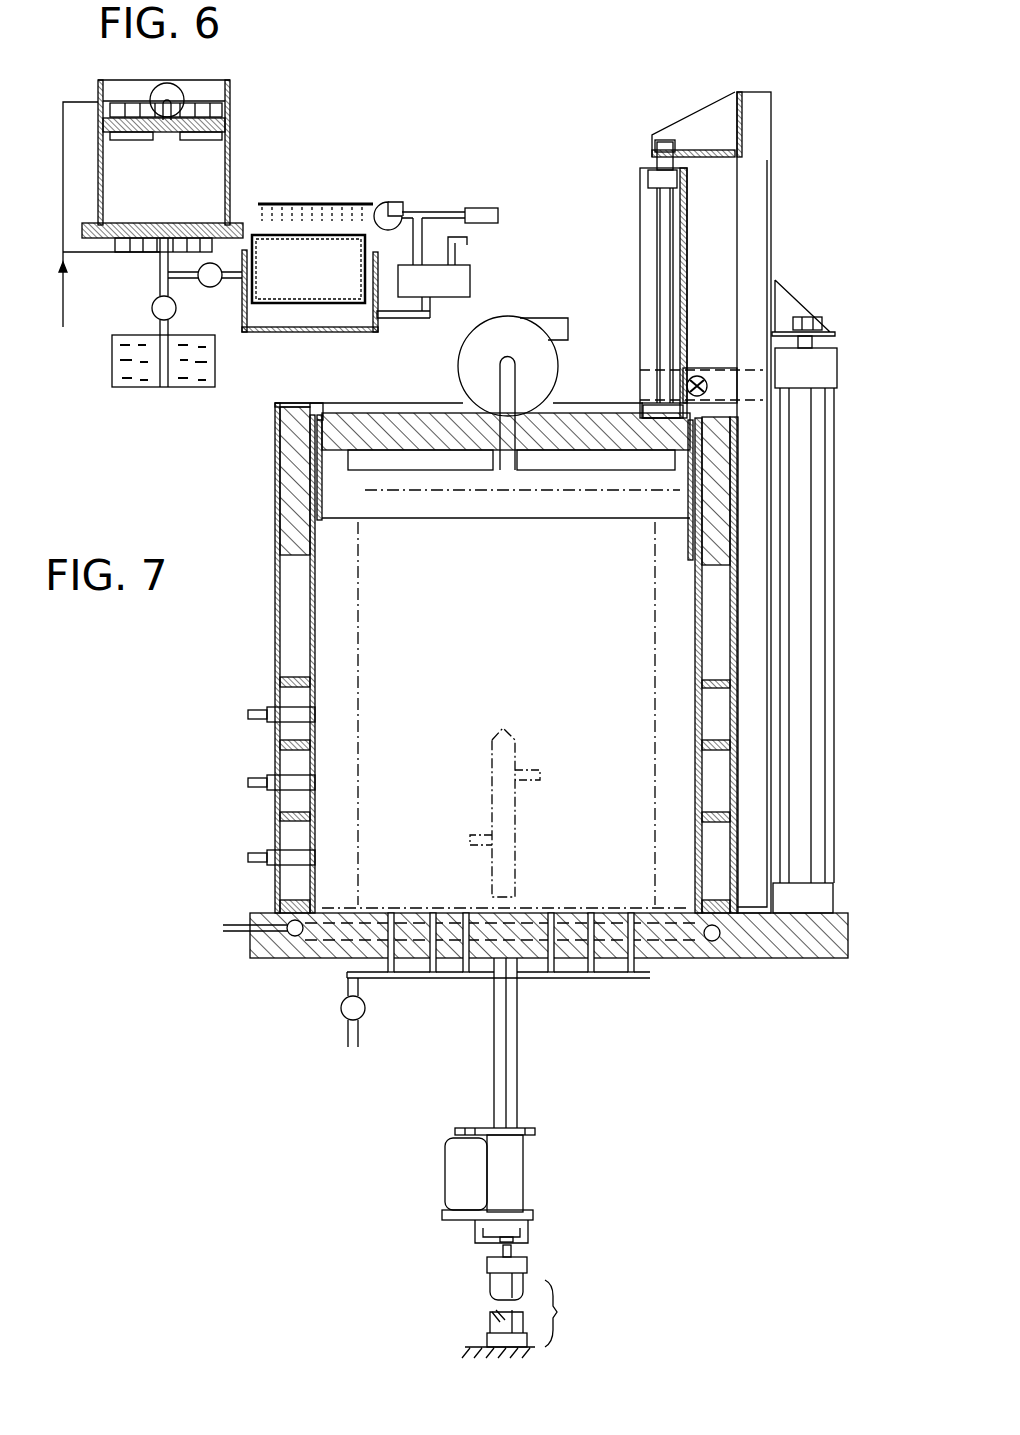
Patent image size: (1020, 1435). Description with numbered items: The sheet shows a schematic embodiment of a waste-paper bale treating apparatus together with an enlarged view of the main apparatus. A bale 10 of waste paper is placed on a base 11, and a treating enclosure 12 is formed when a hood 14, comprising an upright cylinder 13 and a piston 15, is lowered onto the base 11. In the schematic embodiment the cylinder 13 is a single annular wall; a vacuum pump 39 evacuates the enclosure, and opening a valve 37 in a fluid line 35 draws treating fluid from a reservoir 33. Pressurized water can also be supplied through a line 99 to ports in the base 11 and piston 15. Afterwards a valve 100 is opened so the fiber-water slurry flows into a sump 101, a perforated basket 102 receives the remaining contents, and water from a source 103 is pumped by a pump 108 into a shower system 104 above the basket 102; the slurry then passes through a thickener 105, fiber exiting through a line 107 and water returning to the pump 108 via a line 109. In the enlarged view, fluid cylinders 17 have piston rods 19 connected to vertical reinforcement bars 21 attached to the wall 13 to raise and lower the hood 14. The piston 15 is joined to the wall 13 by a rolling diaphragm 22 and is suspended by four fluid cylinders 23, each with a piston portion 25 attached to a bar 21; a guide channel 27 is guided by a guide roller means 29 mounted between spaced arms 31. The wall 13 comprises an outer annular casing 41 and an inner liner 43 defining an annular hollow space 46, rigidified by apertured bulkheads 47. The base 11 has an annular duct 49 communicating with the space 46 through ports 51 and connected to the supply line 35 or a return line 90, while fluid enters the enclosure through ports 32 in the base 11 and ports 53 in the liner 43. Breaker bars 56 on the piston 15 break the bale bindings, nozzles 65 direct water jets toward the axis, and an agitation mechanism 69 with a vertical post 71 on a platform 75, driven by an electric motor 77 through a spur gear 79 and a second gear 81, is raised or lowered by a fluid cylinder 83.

In FIG. 7, the bale 10 is at (358, 600).
In FIG. 7, the base 11 is at (800, 958).
In FIG. 7, the treating enclosure 12 is at (330, 695).
In FIG. 6, the cylinder 13 is at (232, 95).
In FIG. 7, the cylinder 13 is at (738, 462).
In FIG. 6, the hood 14 is at (98, 90).
In FIG. 7, the hood 14 is at (725, 652).
In FIG. 6, the piston 15 is at (232, 125).
In FIG. 7, the piston 15 is at (568, 455).
In FIG. 7, the fluid cylinders 17 is at (818, 712).
In FIG. 7, the piston rods 19 is at (812, 340).
In FIG. 7, the vertical reinforcement bars 21 is at (768, 203).
In FIG. 7, the rolling diaphragm 22 is at (323, 520).
In FIG. 7, the fluid cylinders 23 is at (648, 250).
In FIG. 7, the piston portion 25 is at (655, 162).
In FIG. 7, the guide channel 27 is at (640, 220).
In FIG. 7, the guide roller means 29 is at (697, 375).
In FIG. 7, the spaced arms 31 is at (730, 368).
In FIG. 7, the ports 32 is at (394, 960).
In FIG. 6, the treating fluid reservoir 33 is at (112, 362).
In FIG. 6, the fluid line 35 is at (160, 285).
In FIG. 7, the fluid line 35 is at (348, 1035).
In FIG. 6, the valve 37 is at (152, 310).
In FIG. 7, the valve 37 is at (341, 1008).
In FIG. 6, the vacuum pump 39 is at (185, 95).
In FIG. 7, the vacuum pump 39 is at (555, 368).
In FIG. 7, the outer annular casing 41 is at (275, 618).
In FIG. 7, the inner rigid liner 43 is at (315, 615).
In FIG. 7, the annular hollow space 46 is at (290, 677).
In FIG. 7, the apertured bulkheads 47 is at (695, 735).
In FIG. 7, the annular internal flow duct 49 is at (712, 942).
In FIG. 7, the ports 51 is at (702, 905).
In FIG. 7, the ports 53 is at (315, 760).
In FIG. 7, the breaker bars 56 is at (455, 455).
In FIG. 7, the fluid nozzles 65 is at (315, 714).
In FIG. 7, the mechanical agitation mechanism 69 is at (492, 797).
In FIG. 7, the vertical post 71 is at (494, 1025).
In FIG. 7, the platform 75 is at (442, 1215).
In FIG. 7, the electric motor 77 is at (445, 1160).
In FIG. 7, the spur gear 79 is at (455, 1131).
In FIG. 7, the second gear 81 is at (537, 1132).
In FIG. 7, the fluid cylinder 83 is at (490, 1288).
In FIG. 7, the fluid return line 90 is at (238, 925).
In FIG. 6, the line 99 is at (68, 170).
In FIG. 6, the valve 100 is at (216, 287).
In FIG. 6, the sump 101 is at (340, 332).
In FIG. 6, the basket 102 is at (290, 303).
In FIG. 6, the water source 103 is at (490, 208).
In FIG. 6, the shower system 104 is at (306, 200).
In FIG. 7, the shower system 104 is at (275, 466).
In FIG. 6, the thickener 105 is at (470, 280).
In FIG. 6, the line 107 is at (468, 250).
In FIG. 6, the pump 108 is at (385, 202).
In FIG. 6, the line 109 is at (418, 225).